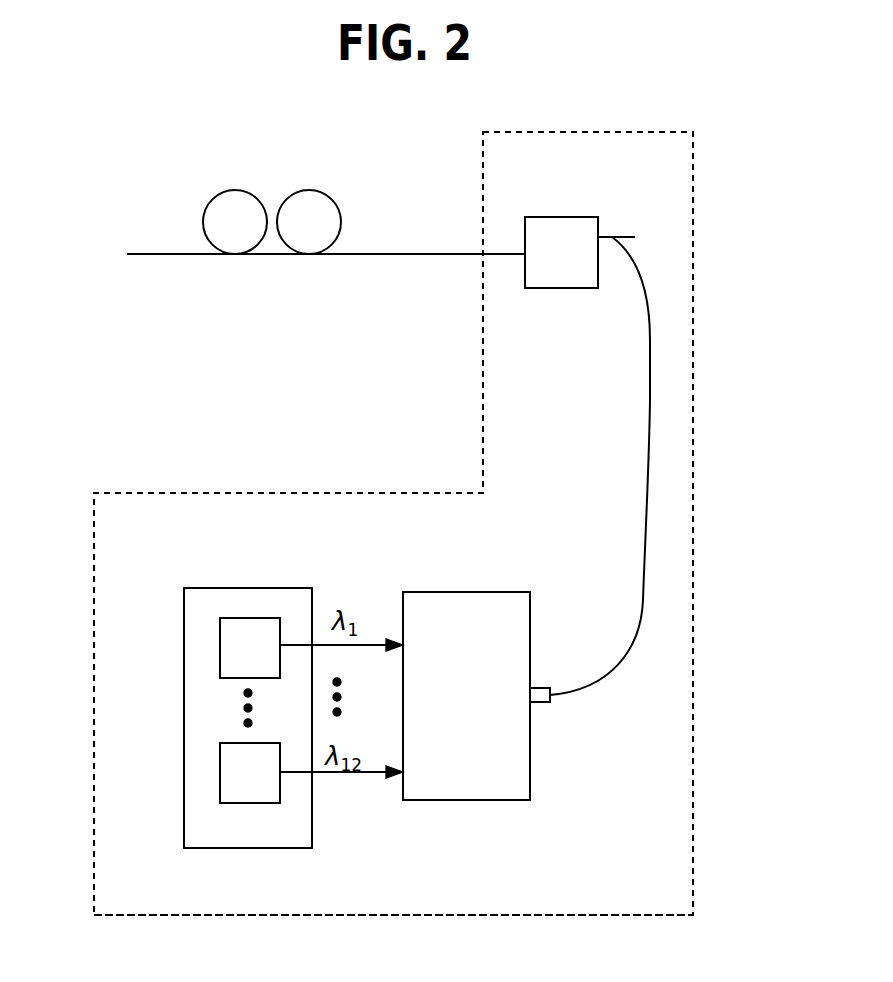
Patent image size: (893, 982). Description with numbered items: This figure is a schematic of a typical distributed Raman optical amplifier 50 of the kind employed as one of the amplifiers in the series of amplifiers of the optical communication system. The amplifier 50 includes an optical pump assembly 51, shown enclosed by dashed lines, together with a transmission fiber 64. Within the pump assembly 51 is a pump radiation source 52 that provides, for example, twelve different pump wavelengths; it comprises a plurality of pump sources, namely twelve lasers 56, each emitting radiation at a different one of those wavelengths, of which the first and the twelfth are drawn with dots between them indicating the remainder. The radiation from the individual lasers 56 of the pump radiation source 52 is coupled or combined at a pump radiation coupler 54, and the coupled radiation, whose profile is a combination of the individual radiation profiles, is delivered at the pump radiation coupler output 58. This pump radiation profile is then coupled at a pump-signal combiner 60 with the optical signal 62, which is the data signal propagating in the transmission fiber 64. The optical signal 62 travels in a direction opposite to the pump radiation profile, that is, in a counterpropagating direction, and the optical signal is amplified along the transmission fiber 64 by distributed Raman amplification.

The distributed Raman optical amplifier 50 is at (764, 259).
The optical pump assembly 51 is at (513, 915).
The pump radiation source 52 is at (264, 588).
The pump radiation coupler 54 is at (505, 592).
The lasers 56 is at (220, 650).
The pump radiation coupler output 58 is at (548, 688).
The pump-signal combiner 60 is at (550, 217).
The optical signal 62 is at (135, 237).
The transmission fiber 64 is at (322, 192).